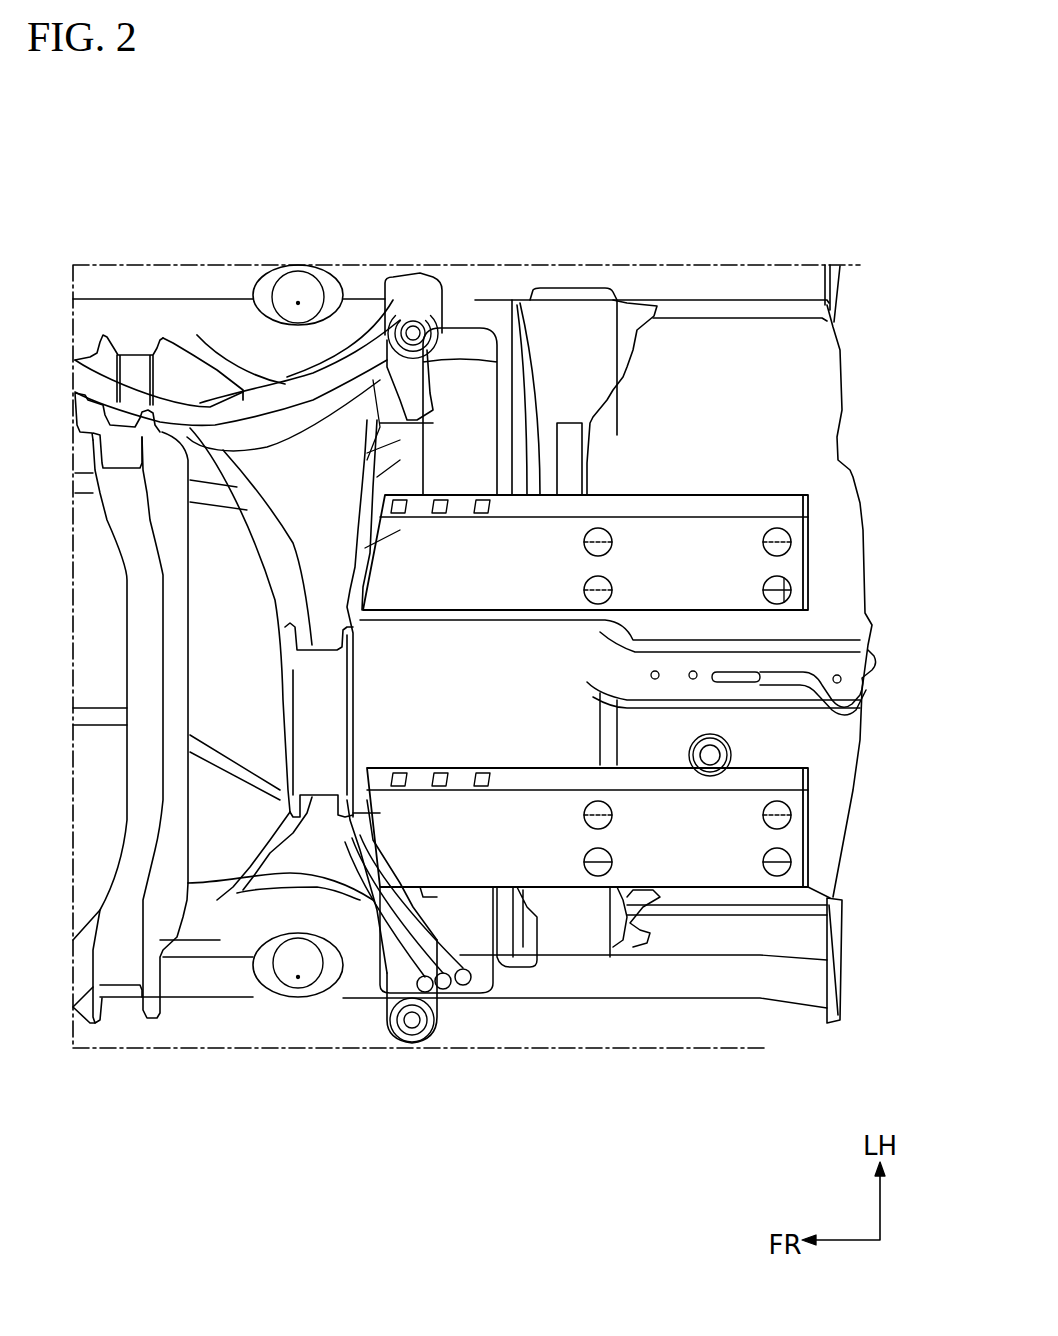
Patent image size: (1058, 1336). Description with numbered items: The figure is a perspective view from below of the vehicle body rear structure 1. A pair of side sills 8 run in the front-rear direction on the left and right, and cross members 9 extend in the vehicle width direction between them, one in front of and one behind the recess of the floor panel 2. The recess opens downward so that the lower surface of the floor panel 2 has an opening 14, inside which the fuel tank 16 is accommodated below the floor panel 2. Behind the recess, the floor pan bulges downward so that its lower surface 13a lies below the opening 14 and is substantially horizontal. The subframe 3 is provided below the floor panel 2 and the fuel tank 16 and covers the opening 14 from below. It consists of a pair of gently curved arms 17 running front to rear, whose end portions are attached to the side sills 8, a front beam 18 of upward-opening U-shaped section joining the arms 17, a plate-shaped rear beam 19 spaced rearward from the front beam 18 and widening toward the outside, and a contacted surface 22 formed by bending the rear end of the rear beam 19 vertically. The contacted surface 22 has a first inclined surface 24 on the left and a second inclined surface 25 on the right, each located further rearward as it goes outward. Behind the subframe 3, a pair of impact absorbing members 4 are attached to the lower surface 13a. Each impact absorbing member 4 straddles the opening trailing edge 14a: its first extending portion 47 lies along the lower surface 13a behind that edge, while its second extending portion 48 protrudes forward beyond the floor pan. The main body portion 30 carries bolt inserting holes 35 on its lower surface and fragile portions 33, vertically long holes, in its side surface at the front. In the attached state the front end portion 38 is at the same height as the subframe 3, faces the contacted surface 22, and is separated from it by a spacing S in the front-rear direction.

The vehicle body rear structure 1 is at (662, 217).
The floor panel 2 is at (843, 371).
The subframe 3 is at (327, 950).
The impact absorbing member 4 is at (763, 498).
The side sill 8 is at (203, 272).
The cross member 9 is at (457, 407).
The lower surface 13a is at (820, 738).
The opening 14 is at (233, 625).
The opening trailing edge 14a is at (540, 430).
The fuel tank 16 is at (288, 357).
The arm 17 is at (187, 415).
The front beam 18 is at (143, 735).
The rear beam 19 is at (317, 553).
The contacted surface 22 is at (360, 673).
The first inclined surface 24 is at (392, 417).
The second inclined surface 25 is at (414, 1030).
The main body portion 30 is at (740, 555).
The fragile portion 33 is at (477, 775).
The bolt inserting hole 35 is at (790, 598).
The front end portion 38 is at (353, 581).
The first extending portion 47 is at (741, 510).
The second extending portion 48 is at (505, 570).
The spacing S is at (350, 553).